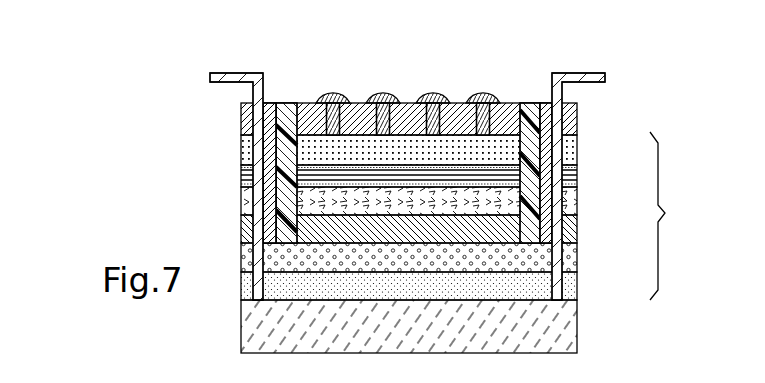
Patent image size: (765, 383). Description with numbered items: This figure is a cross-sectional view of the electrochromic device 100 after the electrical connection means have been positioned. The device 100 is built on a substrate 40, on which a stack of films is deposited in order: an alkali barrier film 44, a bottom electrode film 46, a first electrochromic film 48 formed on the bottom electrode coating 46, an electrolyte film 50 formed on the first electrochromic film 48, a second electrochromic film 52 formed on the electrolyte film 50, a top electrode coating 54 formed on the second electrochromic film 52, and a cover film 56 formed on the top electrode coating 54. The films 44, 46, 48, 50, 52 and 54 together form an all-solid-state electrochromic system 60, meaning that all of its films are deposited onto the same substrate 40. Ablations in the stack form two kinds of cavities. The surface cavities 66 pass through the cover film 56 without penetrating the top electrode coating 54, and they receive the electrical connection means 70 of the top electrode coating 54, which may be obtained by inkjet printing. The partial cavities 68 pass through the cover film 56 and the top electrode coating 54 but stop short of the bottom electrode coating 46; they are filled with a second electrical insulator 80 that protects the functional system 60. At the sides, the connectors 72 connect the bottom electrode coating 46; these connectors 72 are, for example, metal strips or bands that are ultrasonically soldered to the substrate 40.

The device 100 is at (150, 160).
The substrate 40 is at (568, 327).
The alkali barrier film 44 is at (568, 287).
The bottom electrode film 46 is at (568, 258).
The first electrochromic film 48 is at (568, 231).
The electrolyte film 50 is at (568, 203).
The second electrochromic film 52 is at (568, 178).
The top electrode coating 54 is at (568, 155).
The cover film 56 is at (568, 118).
The all-solid-state electrochromic system 60 is at (673, 216).
The surface cavities 66 is at (333, 110).
The partial cavities 68 is at (290, 113).
The electrical connection means 70 is at (320, 97).
The connectors 72 is at (232, 78).
The second electrical insulator 80 is at (283, 117).